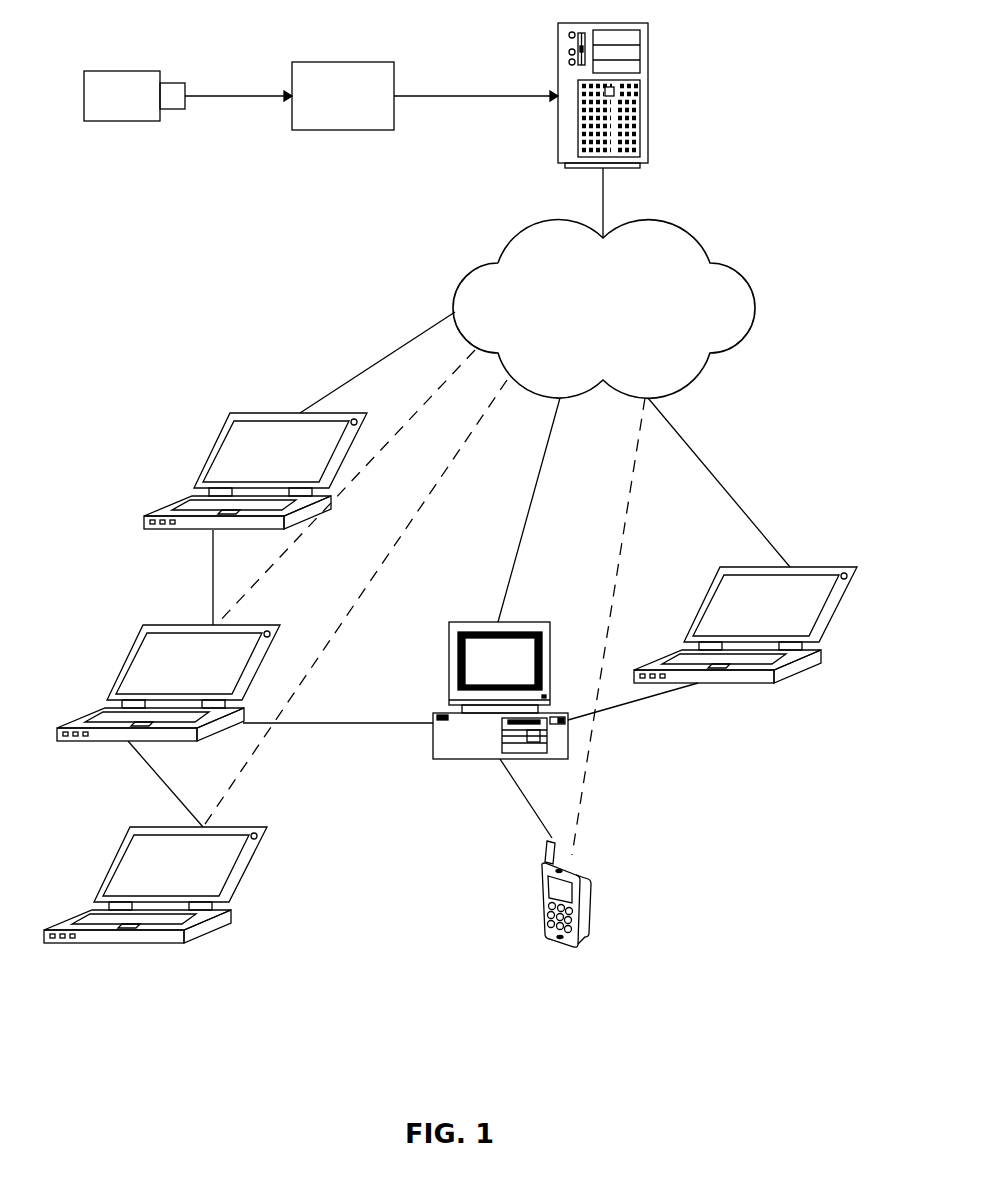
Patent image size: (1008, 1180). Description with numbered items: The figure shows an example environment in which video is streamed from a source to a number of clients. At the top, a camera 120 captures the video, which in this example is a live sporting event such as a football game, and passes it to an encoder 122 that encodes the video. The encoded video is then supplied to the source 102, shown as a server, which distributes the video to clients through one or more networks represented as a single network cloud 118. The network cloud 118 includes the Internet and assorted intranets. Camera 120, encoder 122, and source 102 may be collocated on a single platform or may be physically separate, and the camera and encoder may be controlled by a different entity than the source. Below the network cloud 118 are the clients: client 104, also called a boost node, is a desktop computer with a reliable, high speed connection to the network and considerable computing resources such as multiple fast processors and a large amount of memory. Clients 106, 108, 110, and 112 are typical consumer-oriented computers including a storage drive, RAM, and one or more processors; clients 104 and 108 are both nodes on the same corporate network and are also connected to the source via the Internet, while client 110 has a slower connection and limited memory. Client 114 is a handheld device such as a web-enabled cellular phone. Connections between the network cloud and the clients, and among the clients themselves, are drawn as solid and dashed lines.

The source 102 is at (648, 90).
The client 104 is at (498, 622).
The client 106 is at (218, 438).
The client 108 is at (797, 567).
The client 110 is at (123, 663).
The client 112 is at (258, 830).
The client 114 is at (592, 893).
The network cloud 118 is at (652, 216).
The camera 120 is at (107, 71).
The encoder 122 is at (345, 62).